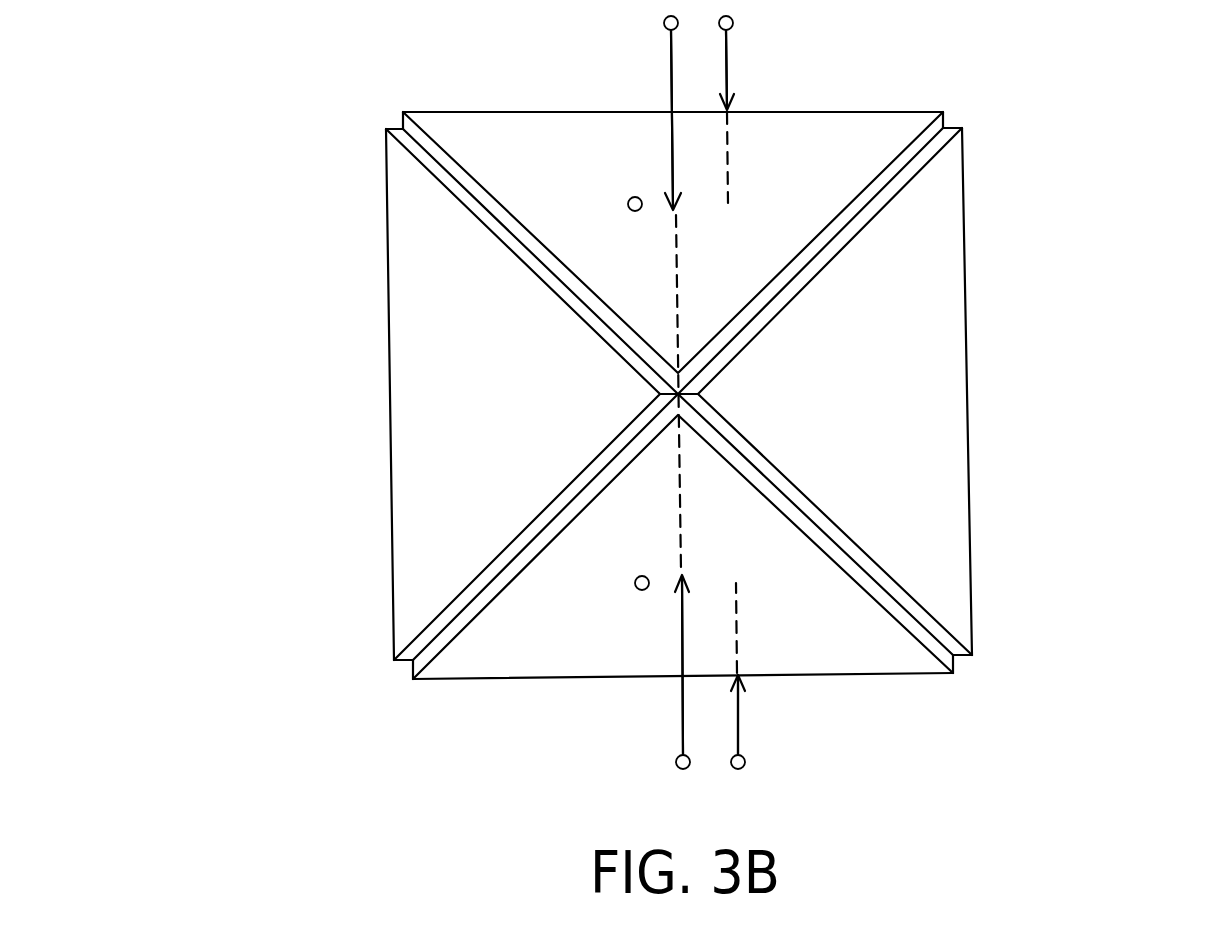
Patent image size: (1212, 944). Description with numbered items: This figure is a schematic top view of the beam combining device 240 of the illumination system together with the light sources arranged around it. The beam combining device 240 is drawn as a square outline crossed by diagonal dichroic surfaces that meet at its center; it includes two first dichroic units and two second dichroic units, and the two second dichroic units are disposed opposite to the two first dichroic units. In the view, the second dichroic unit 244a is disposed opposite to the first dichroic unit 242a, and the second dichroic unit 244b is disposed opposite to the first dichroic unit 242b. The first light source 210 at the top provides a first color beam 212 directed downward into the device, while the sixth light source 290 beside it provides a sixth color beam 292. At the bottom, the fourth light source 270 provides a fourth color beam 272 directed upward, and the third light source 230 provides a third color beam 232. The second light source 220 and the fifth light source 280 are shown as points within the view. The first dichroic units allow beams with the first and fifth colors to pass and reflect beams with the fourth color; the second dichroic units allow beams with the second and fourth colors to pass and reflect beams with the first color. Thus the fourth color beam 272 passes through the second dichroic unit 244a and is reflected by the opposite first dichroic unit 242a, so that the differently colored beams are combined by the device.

The first light source 210 is at (664, 23).
The first color beam 212 is at (671, 87).
The second light source 220 is at (635, 583).
The third light source 230 is at (745, 762).
The third color beam 232 is at (738, 713).
The beam combining device 240 is at (677, 418).
The first dichroic unit 242a is at (860, 130).
The first dichroic unit 242b is at (428, 505).
The second dichroic unit 244a is at (858, 640).
The second dichroic unit 244b is at (932, 500).
The fourth light source 270 is at (676, 762).
The fourth color beam 272 is at (683, 700).
The fifth light source 280 is at (628, 204).
The sixth light source 290 is at (733, 20).
The sixth color beam 292 is at (727, 72).